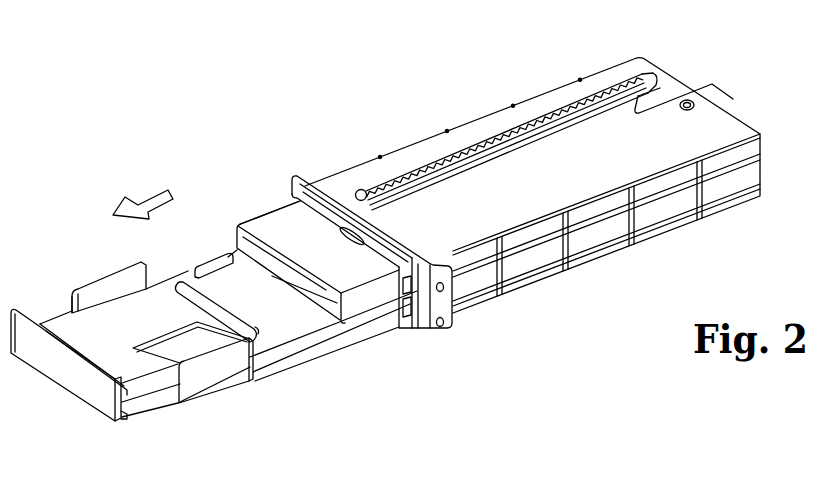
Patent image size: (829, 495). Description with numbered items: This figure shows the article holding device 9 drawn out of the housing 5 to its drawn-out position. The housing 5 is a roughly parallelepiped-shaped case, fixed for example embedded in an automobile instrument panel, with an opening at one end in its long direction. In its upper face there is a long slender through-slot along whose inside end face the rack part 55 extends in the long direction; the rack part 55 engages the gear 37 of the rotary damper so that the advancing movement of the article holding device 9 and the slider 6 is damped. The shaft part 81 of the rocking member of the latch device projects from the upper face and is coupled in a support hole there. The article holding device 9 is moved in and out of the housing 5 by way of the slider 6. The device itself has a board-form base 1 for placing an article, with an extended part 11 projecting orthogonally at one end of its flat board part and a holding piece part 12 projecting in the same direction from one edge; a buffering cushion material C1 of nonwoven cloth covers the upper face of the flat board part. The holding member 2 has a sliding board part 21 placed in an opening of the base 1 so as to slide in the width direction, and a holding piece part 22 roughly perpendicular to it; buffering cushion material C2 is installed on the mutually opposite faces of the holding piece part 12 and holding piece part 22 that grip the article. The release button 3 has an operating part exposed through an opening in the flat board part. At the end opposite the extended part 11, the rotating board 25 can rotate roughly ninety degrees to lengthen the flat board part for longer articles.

The base 1 is at (333, 345).
The holding member 2 is at (246, 384).
The release button 3 is at (208, 264).
The housing 5 is at (742, 107).
The slider 6 is at (398, 320).
The article holding device 9 is at (271, 199).
The extended part 11 is at (263, 218).
The holding piece part 12 is at (97, 280).
The sliding board part 21 is at (165, 385).
The holding piece part 22 is at (198, 388).
The rotating board 25 is at (78, 388).
The gear 37 is at (359, 189).
The rack part 55 is at (563, 100).
The shaft part 81 is at (697, 102).
The buffering cushion material C1 is at (258, 335).
The buffering cushion material C2 is at (72, 303).